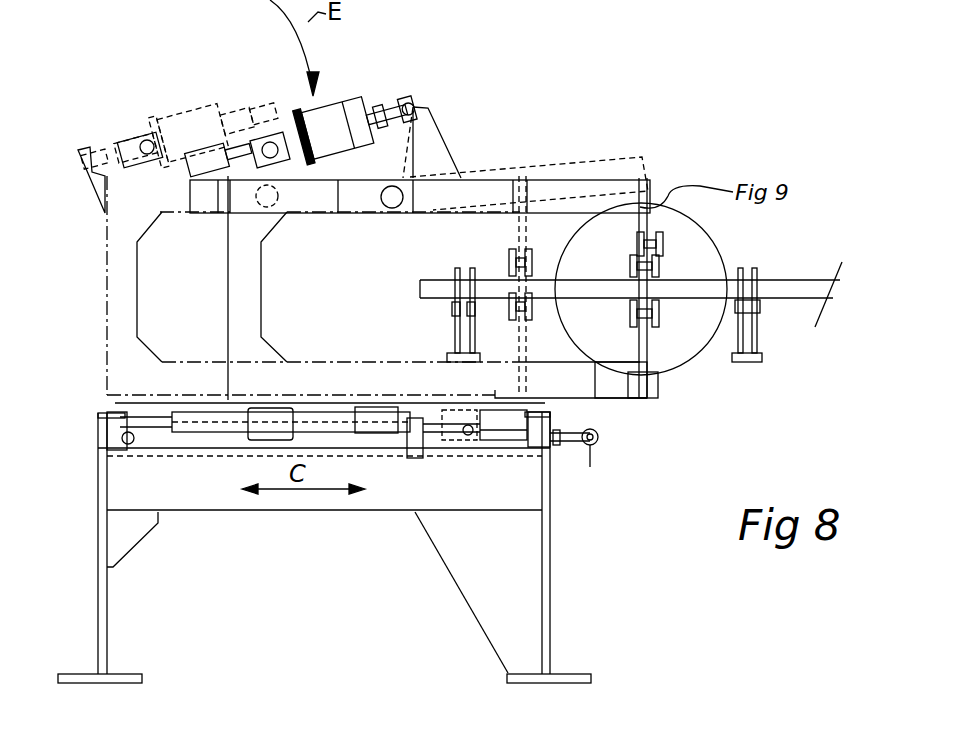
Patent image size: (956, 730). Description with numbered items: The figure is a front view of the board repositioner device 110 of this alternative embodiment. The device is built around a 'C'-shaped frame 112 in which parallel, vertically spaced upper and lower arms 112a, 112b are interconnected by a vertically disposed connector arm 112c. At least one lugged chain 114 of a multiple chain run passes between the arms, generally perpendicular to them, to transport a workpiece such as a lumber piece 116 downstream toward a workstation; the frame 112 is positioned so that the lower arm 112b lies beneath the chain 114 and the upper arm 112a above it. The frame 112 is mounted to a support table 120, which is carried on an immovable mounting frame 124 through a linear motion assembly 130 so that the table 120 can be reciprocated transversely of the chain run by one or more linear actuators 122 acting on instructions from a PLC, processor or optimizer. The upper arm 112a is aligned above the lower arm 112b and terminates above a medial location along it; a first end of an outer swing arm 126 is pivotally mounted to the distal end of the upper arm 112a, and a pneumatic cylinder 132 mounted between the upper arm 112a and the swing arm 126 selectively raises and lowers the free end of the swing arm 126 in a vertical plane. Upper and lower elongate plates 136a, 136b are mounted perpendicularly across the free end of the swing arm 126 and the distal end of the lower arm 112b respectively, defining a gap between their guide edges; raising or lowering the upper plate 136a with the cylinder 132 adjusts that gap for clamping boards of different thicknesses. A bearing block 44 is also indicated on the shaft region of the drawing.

The board repositioner device 110 is at (529, 135).
The 'C'-shaped frame 112 is at (232, 286).
The upper arm 112a is at (316, 200).
The lower arm 112b is at (617, 387).
The connector arm 112c is at (242, 310).
The lugged chain 114 is at (452, 315).
The lumber piece 116 is at (775, 287).
The support table 120 is at (313, 402).
The linear actuator 122 is at (217, 440).
The mounting frame 124 is at (548, 533).
The outer swing arm 126 is at (487, 197).
The linear motion assembly 130 is at (501, 422).
The pneumatic cylinder 132 is at (348, 108).
The upper elongate plate 136a is at (647, 192).
The lower elongate plate 136b is at (648, 387).
The bearing block 44 is at (650, 320).